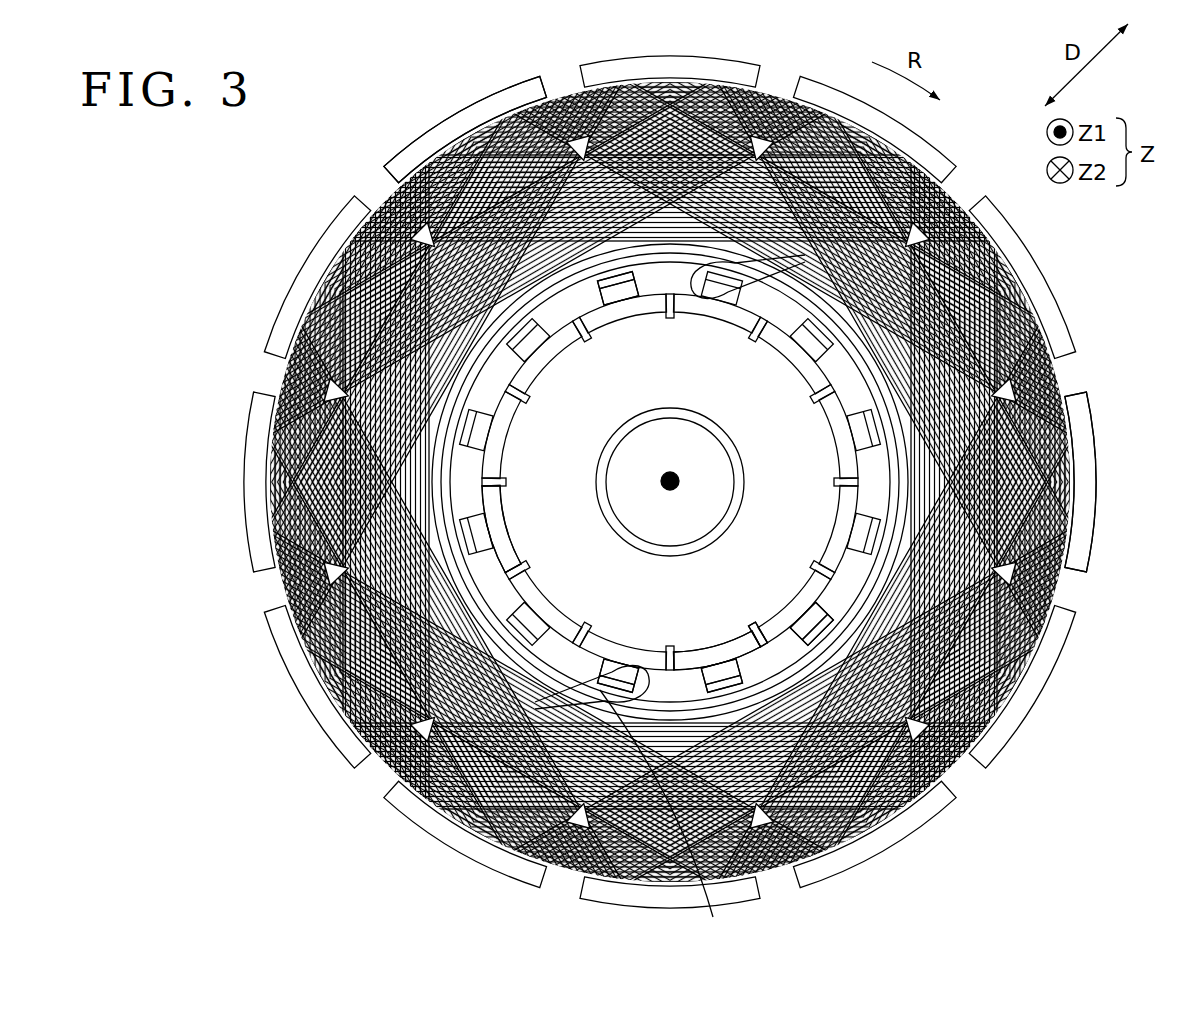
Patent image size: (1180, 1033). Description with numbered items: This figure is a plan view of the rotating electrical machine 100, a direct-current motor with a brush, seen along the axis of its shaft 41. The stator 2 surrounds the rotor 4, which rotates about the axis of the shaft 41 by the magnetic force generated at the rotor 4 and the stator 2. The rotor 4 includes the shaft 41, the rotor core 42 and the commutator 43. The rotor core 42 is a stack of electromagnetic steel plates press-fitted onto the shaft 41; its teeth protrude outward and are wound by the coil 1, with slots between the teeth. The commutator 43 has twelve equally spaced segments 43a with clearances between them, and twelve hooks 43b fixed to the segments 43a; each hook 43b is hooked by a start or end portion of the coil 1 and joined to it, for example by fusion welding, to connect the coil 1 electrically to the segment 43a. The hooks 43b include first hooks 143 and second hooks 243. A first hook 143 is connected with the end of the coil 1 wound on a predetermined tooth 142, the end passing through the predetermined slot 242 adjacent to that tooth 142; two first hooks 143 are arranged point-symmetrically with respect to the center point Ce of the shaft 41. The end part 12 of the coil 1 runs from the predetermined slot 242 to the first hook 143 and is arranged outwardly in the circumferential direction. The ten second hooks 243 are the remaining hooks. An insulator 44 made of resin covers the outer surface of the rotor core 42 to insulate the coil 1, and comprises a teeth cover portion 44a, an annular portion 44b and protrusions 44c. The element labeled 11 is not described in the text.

The rotating electrical machine 100 is at (1085, 287).
The coil 1 is at (1050, 378).
The stator core piece 11 is at (1056, 460).
The end part 12 is at (666, 819).
The stator 2 is at (400, 143).
The rotor core 42 is at (570, 850).
The predetermined tooth 142 is at (520, 843).
The predetermined slot 242 is at (462, 810).
The rotor 4 is at (505, 376).
The shaft 41 is at (687, 412).
The commutator 43 is at (512, 592).
The segment 43a is at (812, 630).
The hook 43b is at (556, 614).
The first hook 143 is at (712, 290).
The second hook 243 is at (800, 614).
The insulator 44 is at (404, 752).
The teeth cover portion 44a is at (300, 591).
The annular portion 44b is at (518, 612).
The protrusion 44c is at (662, 250).
The center point Ce is at (674, 479).